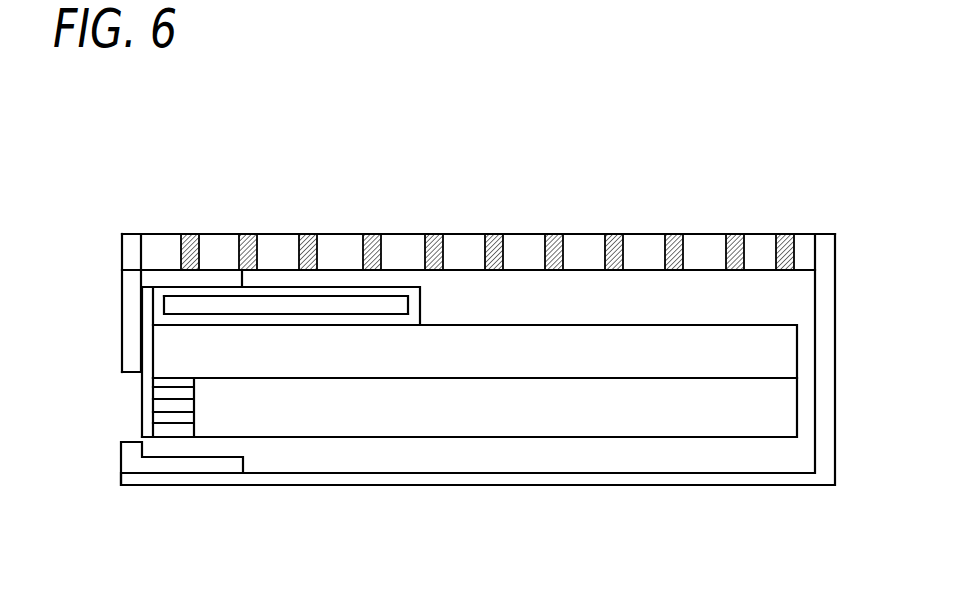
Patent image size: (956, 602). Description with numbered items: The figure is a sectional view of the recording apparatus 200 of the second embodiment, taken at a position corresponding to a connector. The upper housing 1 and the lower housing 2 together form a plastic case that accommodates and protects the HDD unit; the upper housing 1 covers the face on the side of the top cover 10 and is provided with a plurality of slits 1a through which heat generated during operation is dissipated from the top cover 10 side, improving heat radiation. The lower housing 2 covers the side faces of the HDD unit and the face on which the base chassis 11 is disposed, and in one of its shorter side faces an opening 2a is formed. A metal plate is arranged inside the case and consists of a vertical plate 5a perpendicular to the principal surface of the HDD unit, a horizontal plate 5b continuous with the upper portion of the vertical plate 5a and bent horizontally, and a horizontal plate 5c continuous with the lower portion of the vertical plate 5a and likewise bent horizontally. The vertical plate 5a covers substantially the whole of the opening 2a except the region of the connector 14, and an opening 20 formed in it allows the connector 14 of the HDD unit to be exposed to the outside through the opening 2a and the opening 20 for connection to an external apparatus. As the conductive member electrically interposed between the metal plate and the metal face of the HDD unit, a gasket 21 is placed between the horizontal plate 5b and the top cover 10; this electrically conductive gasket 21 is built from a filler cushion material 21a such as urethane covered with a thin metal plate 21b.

The recording apparatus 200 is at (480, 177).
The upper housing 1 is at (528, 247).
The slits 1a is at (787, 242).
The lower housing 2 is at (528, 487).
The opening 2a is at (112, 315).
The vertical plate 5a is at (128, 305).
The horizontal plate 5b is at (170, 280).
The horizontal plate 5c is at (224, 468).
The opening 20 is at (140, 406).
The gasket 21 is at (357, 165).
The filler cushion material 21a is at (278, 307).
The thin metal plate 21b is at (337, 290).
The connector 14 is at (170, 418).
The top cover 10 is at (788, 357).
The base chassis 11 is at (788, 417).